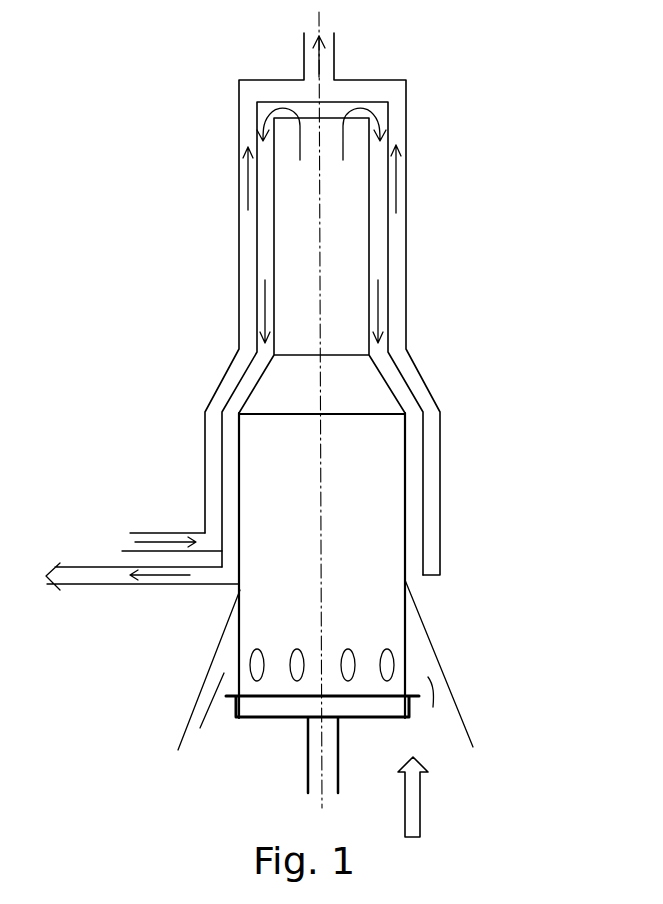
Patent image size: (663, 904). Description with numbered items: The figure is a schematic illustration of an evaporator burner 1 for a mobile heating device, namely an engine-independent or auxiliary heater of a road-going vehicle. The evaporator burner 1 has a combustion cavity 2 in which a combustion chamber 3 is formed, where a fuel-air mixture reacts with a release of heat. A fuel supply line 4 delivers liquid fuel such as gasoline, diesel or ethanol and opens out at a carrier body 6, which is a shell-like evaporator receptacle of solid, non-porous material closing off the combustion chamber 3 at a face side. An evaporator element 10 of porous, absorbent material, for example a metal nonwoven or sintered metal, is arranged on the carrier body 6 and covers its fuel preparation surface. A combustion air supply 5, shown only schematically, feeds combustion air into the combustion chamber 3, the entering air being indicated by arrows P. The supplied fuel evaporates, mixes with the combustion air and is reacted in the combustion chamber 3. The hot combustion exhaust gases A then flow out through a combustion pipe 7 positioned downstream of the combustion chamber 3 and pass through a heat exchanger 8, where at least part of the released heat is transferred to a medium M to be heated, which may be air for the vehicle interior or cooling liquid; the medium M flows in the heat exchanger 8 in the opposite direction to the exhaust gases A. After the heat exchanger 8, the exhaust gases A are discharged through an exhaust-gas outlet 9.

The evaporator burner 1 is at (588, 153).
The combustion cavity 2 is at (407, 587).
The combustion chamber 3 is at (270, 597).
The fuel supply line 4 is at (307, 767).
The combustion air supply 5 is at (413, 795).
The carrier body 6 is at (408, 720).
The combustion pipe 7 is at (370, 247).
The heat exchanger 8 is at (390, 225).
The exhaust-gas outlet 9 is at (67, 572).
The evaporator element 10 is at (270, 705).
The combustion exhaust gases A is at (284, 112).
The medium to be heated M is at (240, 187).
The combustion air arrows P is at (250, 667).